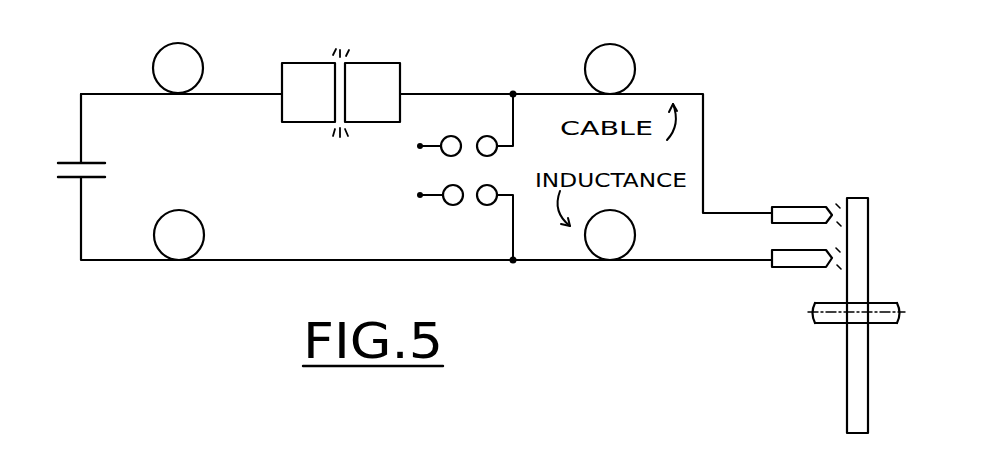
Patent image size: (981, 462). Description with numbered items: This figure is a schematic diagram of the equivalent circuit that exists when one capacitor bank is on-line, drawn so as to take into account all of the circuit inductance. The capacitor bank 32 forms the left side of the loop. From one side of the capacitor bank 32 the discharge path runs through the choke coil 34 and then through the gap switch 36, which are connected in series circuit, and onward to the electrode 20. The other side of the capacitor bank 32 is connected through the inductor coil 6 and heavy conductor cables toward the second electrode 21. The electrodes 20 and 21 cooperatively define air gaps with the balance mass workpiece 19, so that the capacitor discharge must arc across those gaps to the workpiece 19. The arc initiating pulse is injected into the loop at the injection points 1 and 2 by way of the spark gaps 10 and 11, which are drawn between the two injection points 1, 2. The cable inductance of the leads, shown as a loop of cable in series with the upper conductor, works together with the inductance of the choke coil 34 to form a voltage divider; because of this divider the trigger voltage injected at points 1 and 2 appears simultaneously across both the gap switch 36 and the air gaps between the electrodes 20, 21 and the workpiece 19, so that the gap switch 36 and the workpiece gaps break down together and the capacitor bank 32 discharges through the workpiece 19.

The injection point 1 is at (513, 93).
The injection point 2 is at (513, 264).
The inductor coil 6 is at (168, 212).
The spark gap 10 is at (468, 206).
The spark gap 11 is at (468, 135).
The balance mass workpiece 19 is at (856, 198).
The electrode 20 is at (790, 212).
The electrode 21 is at (780, 268).
The capacitor bank 32 is at (112, 170).
The choke coil 34 is at (162, 48).
The gap switch 36 is at (349, 57).